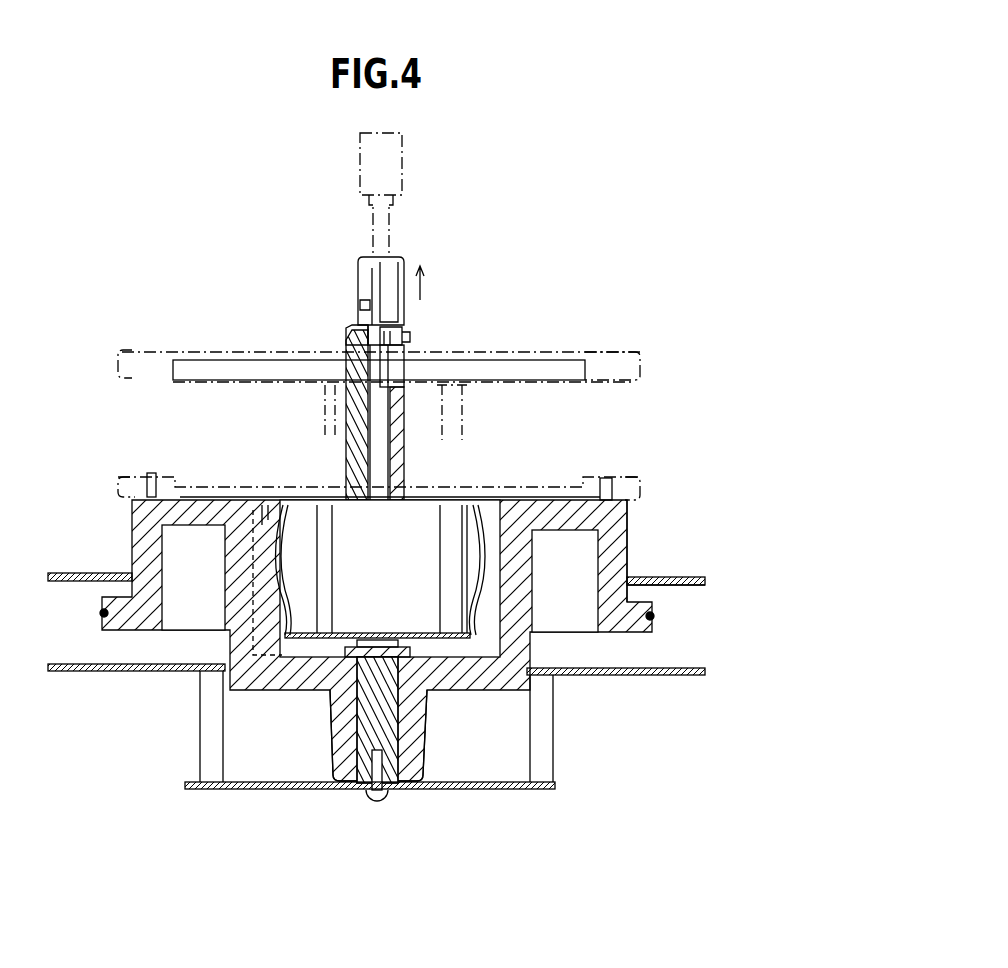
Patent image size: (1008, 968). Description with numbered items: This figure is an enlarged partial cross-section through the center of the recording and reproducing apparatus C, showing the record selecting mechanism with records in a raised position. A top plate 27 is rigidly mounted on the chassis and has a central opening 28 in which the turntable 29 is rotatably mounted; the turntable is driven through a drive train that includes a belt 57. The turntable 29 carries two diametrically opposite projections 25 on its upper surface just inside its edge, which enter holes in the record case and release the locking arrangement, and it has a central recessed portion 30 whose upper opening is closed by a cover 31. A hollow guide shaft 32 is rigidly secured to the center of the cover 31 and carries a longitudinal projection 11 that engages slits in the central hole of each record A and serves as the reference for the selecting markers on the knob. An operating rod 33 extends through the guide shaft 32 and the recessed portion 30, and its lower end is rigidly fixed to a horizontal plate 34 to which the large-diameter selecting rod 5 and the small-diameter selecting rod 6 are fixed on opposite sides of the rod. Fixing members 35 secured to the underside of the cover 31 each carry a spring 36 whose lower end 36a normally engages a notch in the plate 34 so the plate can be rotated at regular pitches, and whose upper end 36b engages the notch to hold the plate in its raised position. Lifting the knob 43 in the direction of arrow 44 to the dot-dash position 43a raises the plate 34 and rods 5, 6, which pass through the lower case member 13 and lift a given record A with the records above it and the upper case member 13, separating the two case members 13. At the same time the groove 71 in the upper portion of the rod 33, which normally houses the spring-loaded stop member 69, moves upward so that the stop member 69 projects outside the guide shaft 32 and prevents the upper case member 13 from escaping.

The raised knob position 43a is at (408, 166).
The groove 71 is at (375, 210).
The knob 43 is at (395, 268).
The arrow 44 is at (422, 292).
The stop member 69 is at (410, 337).
The case member 13 is at (622, 362).
The record A is at (565, 380).
The projection 25 is at (148, 485).
The longitudinal projection 11 is at (347, 423).
The guide shaft 32 is at (405, 410).
The operating rod 33 is at (389, 462).
The fixing member 35 is at (505, 520).
The turntable 29 is at (628, 548).
The central opening 28 is at (634, 574).
The top plate 27 is at (700, 584).
The belt 57 is at (657, 618).
The cover 31 is at (283, 508).
The upper end of spring 36b is at (448, 532).
The spring 36 is at (495, 628).
The lower end of spring 36a is at (465, 615).
The recording and reproducing apparatus C is at (683, 771).
The large-diameter selecting rod 5 is at (455, 620).
The horizontal plate 34 is at (427, 630).
The small-diameter selecting rod 6 is at (323, 630).
The central recessed portion 30 is at (293, 655).